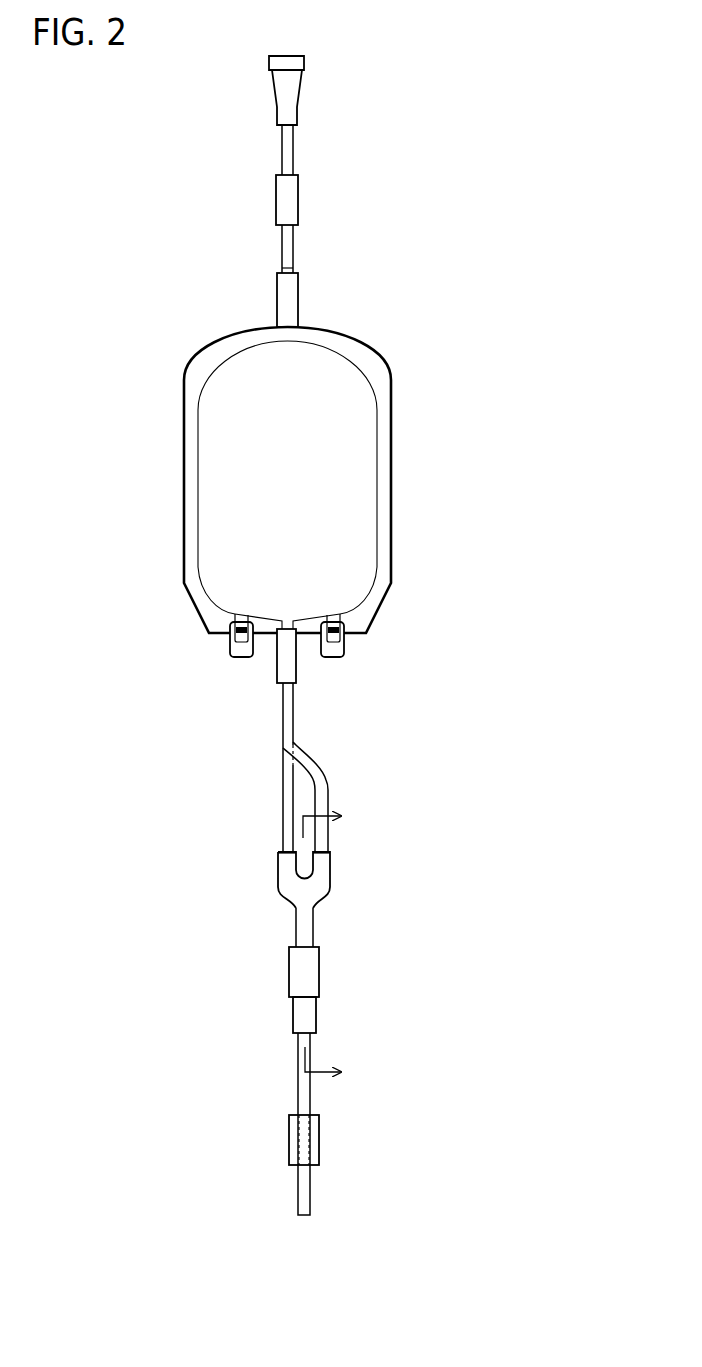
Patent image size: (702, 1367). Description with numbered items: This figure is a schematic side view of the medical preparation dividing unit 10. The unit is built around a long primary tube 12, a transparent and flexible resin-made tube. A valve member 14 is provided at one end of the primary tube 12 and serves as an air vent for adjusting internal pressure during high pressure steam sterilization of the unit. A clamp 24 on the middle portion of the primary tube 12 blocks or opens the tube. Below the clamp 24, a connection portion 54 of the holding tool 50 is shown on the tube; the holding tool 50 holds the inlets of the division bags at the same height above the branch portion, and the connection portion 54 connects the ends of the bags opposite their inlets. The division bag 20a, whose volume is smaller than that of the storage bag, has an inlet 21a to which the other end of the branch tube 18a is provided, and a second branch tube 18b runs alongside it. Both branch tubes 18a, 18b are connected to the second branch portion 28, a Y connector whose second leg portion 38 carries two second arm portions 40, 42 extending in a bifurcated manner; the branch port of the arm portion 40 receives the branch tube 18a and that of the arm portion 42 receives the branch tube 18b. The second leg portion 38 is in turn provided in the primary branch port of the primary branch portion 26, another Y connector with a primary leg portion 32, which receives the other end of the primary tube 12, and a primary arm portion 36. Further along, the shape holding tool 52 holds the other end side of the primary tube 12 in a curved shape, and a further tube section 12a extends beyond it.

The medical preparation dividing unit 10 is at (115, 137).
The valve member 14 is at (277, 97).
The primary tube 12 is at (280, 248).
The clamp 24 is at (283, 202).
The connection portion 54 is at (284, 296).
The holding tool 50 is at (300, 271).
The division bag 20a is at (392, 498).
The inlet 21a is at (291, 668).
The branch tube 18a is at (305, 767).
The branch tube 18b is at (287, 797).
The second branch portion 28 is at (331, 893).
The second arm portion 42 is at (288, 864).
The second arm portion 40 is at (322, 863).
The second leg portion 38 is at (305, 928).
The primary branch portion 26 is at (333, 988).
The primary arm portion 36 is at (305, 952).
The primary leg portion 32 is at (309, 1015).
The shape holding tool 52 is at (321, 1140).
The tube 12a is at (311, 1190).